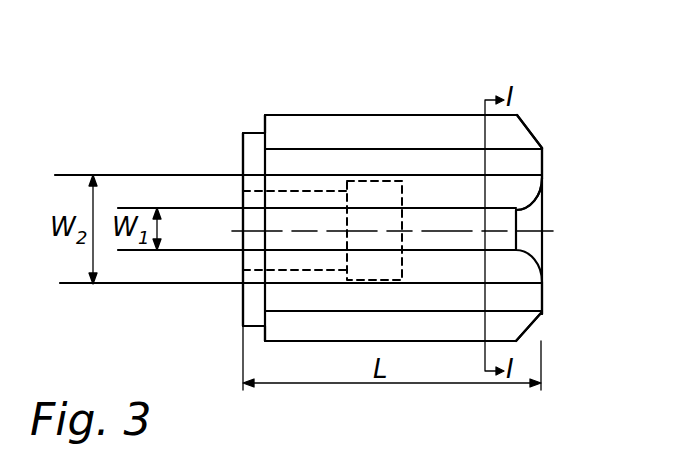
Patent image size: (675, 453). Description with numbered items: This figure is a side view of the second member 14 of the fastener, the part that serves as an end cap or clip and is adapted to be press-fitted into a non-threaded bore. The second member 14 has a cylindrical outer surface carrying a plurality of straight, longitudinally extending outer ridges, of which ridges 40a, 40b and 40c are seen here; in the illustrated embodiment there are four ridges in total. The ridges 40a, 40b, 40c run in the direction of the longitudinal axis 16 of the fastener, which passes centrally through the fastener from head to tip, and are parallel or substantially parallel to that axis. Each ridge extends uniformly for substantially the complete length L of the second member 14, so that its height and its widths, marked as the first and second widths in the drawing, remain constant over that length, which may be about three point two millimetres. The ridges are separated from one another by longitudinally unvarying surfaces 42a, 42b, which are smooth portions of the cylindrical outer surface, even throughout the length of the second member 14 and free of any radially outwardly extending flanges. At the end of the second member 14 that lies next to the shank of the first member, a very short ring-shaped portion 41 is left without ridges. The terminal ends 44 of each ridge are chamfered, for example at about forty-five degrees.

The second member 14 is at (383, 86).
The longitudinal axis 16 is at (553, 231).
The outer ridge 40a is at (283, 219).
The outer ridge 40b is at (283, 124).
The outer ridge 40c is at (287, 331).
The ring-shaped portion 41 is at (250, 133).
The longitudinally unvarying surface 42a is at (542, 160).
The longitudinally unvarying surface 42b is at (541, 298).
The terminal end 44 is at (528, 131).